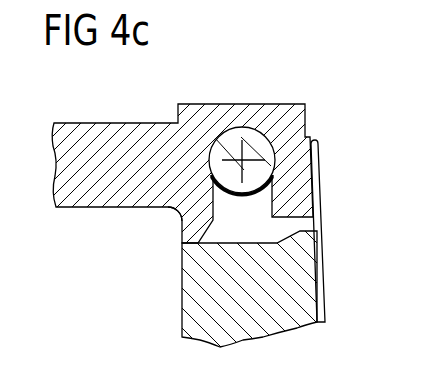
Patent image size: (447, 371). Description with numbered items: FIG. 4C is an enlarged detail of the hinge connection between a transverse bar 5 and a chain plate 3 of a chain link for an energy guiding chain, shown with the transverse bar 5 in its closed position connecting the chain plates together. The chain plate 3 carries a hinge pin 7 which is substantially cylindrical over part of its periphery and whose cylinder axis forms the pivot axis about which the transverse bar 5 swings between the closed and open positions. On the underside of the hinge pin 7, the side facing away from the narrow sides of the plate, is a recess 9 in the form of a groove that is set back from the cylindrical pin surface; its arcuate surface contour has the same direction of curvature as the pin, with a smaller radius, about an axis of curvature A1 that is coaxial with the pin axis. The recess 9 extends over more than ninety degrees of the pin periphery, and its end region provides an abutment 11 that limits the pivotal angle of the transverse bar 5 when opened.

The transverse bar 5 is at (103, 133).
The hinge pin 7 is at (238, 136).
The recess 9 is at (226, 205).
The abutment 11 is at (170, 209).
The chain plate 3 is at (303, 302).
The axis of curvature of the recess A1 is at (280, 132).